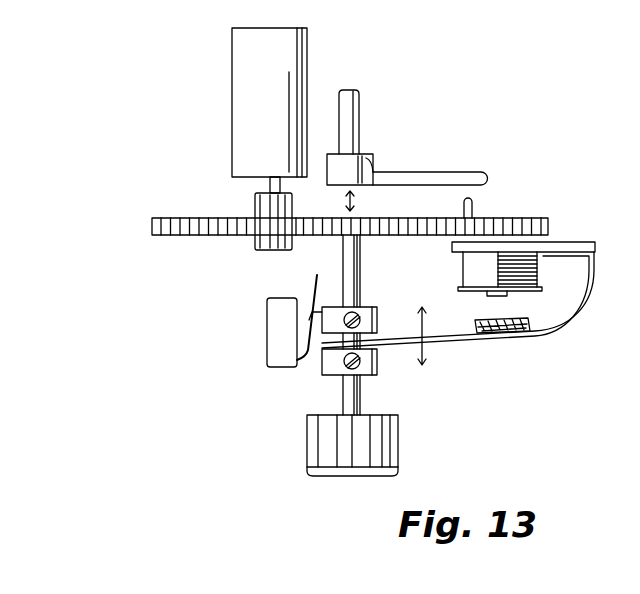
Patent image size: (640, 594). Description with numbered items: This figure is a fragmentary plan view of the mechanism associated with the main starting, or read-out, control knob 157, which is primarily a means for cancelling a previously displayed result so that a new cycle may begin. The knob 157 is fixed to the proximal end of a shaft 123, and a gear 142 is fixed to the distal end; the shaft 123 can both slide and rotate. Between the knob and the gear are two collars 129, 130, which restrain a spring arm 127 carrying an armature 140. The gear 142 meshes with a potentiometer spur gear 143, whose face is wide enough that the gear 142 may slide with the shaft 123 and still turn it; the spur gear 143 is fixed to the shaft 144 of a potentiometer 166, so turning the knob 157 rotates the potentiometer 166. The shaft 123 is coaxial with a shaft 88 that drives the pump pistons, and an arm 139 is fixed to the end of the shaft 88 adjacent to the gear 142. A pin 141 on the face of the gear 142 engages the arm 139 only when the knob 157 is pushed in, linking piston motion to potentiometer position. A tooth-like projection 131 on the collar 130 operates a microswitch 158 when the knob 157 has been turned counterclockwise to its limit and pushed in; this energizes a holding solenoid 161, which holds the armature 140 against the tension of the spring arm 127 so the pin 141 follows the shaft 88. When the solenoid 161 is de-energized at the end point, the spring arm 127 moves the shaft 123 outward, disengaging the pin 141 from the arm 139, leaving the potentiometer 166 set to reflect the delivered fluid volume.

The shaft 88 is at (361, 105).
The shaft 123 is at (360, 282).
The spring arm 127 is at (572, 321).
The collar 129 is at (329, 372).
The collar 130 is at (362, 312).
The tooth-like projection 131 is at (315, 312).
The arm 139 is at (428, 178).
The armature 140 is at (475, 326).
The pin 141 is at (477, 203).
The gear 142 is at (163, 218).
The potentiometer spur gear 143 is at (263, 252).
The shaft 144 is at (268, 186).
The read-out control knob 157 is at (400, 428).
The microswitch 158 is at (267, 328).
The holding solenoid 161 is at (462, 278).
The potentiometer 166 is at (232, 52).